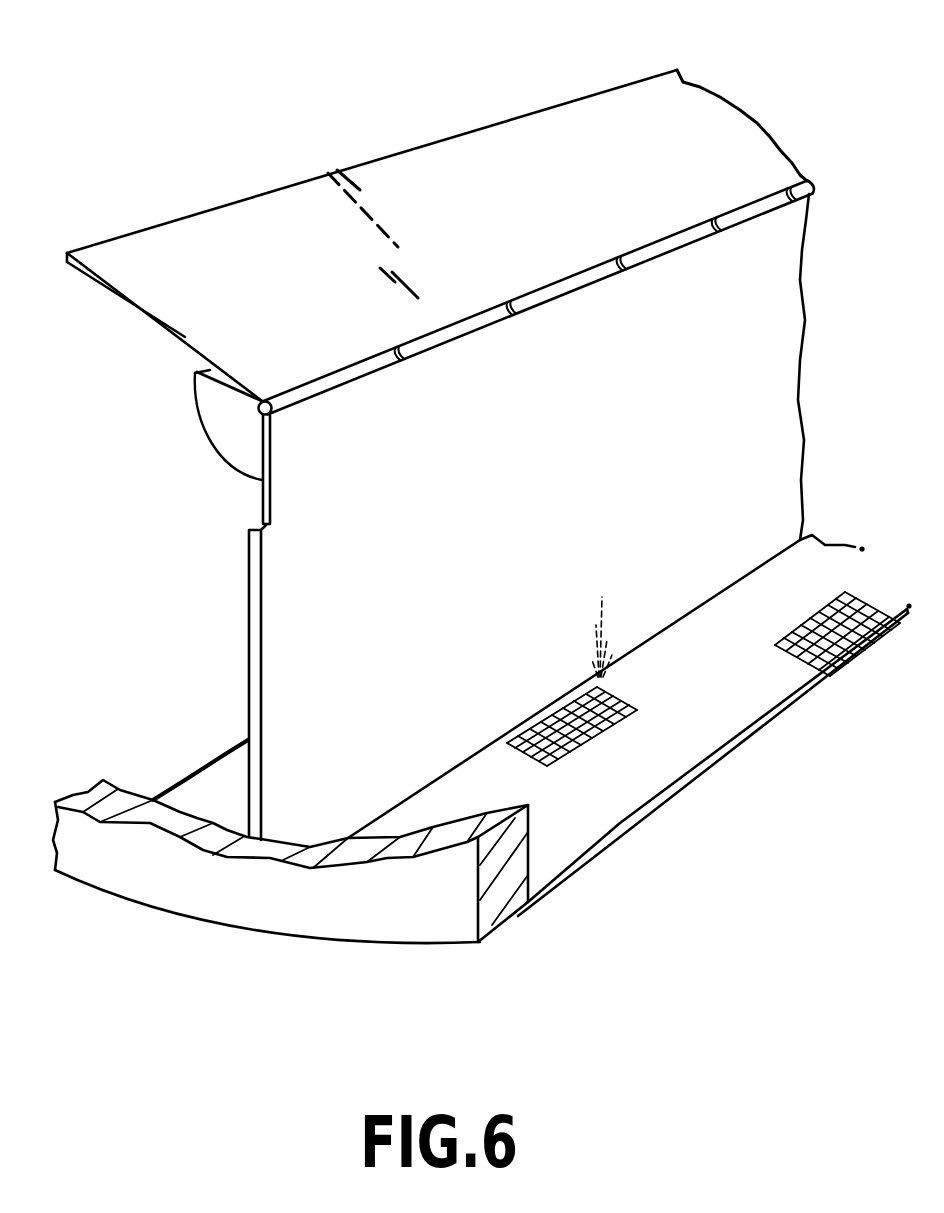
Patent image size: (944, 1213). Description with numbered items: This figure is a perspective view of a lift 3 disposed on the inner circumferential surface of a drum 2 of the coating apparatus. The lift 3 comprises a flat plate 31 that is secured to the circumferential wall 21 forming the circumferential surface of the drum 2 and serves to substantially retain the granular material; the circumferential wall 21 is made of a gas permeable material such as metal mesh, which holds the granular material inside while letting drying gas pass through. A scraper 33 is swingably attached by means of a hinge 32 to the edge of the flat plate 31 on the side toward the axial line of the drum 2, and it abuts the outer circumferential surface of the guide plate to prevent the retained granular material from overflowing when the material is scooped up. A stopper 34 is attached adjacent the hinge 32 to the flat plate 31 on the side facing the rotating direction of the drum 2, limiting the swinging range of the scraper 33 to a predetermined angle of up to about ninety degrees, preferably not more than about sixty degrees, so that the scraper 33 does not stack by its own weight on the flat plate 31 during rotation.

The lift 3 is at (257, 153).
The scraper 33 is at (701, 87).
The hinge 32 is at (809, 182).
The flat plate 31 is at (770, 357).
The stopper 34 is at (237, 443).
The circumferential wall 21 is at (743, 693).
The drum 2 is at (447, 920).